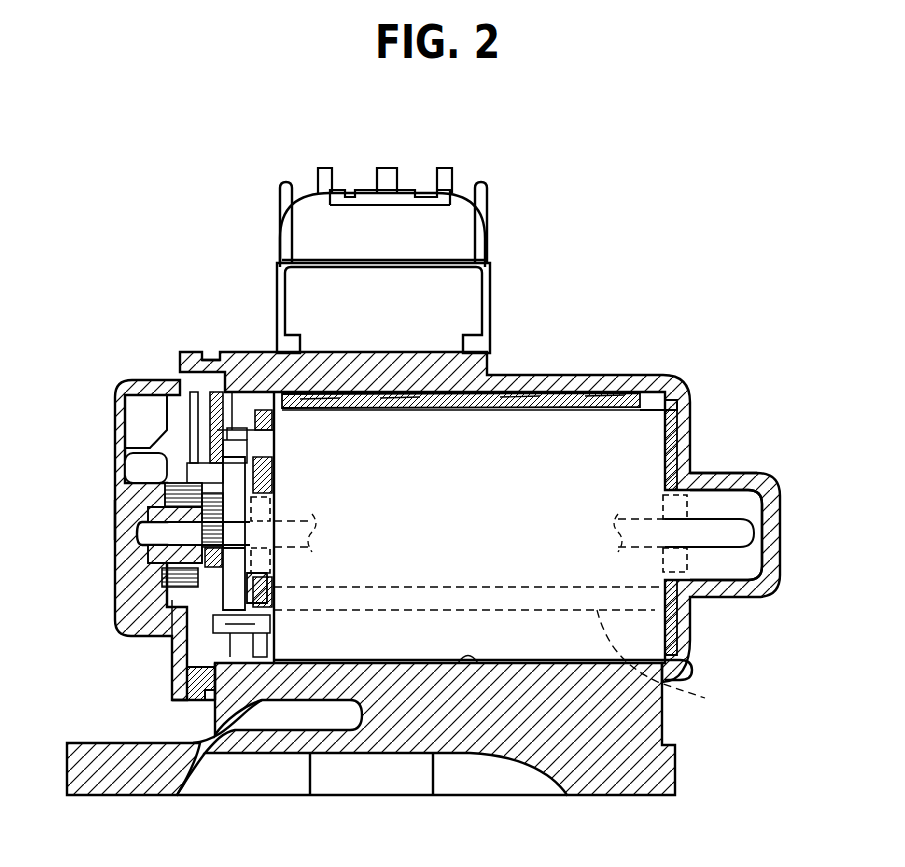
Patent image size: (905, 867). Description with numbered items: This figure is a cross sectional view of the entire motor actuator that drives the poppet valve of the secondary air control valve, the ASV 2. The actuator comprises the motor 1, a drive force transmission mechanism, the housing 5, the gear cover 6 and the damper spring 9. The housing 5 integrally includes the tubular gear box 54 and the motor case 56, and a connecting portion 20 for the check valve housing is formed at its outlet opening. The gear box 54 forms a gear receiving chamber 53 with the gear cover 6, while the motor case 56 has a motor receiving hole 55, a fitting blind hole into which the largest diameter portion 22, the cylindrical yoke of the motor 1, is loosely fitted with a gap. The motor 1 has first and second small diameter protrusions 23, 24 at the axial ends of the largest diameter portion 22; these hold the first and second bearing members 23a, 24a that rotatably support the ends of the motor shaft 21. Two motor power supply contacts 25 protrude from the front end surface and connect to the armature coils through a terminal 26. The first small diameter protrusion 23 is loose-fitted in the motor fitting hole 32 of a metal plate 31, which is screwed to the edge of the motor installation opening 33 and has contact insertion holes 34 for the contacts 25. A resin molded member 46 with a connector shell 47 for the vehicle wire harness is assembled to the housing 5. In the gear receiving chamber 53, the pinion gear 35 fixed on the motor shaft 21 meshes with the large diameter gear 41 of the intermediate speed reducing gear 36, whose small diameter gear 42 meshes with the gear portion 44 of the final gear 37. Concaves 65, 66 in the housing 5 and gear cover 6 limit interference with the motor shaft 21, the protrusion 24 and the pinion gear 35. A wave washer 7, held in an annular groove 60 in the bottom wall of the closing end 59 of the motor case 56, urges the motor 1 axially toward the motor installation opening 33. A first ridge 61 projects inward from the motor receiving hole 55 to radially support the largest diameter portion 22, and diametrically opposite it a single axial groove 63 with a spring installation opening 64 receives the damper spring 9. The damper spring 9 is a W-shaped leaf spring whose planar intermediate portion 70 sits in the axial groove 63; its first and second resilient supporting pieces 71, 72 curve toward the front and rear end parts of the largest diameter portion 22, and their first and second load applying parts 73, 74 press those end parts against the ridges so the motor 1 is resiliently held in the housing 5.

The motor 1 is at (473, 366).
The secondary air control valve (ASV) 2 is at (665, 345).
The housing 5 is at (688, 386).
The gear cover 6 is at (180, 362).
The wave washer 7 is at (677, 430).
The damper spring 9 is at (423, 341).
The connecting portion 20 is at (625, 795).
The motor shaft 21 is at (140, 535).
The cylindrical portion (largest diameter portion) 22 is at (543, 403).
The first small diameter protrusion 23 is at (245, 573).
The first bearing member 23a is at (274, 500).
The second small diameter protrusion 24 is at (697, 573).
The second bearing member 24a is at (660, 498).
The motor power supply contacts 25 is at (192, 673).
The terminal 26 is at (277, 595).
The metal plate 31 is at (180, 697).
The motor fitting hole 32 is at (185, 635).
The motor installation opening 33 is at (240, 432).
The contact insertion holes 34 is at (270, 610).
The pinion gear 35 is at (148, 560).
The intermediate speed reducing gear 36 is at (111, 494).
The final gear 37 is at (226, 311).
The large diameter gear 41 is at (150, 480).
The small diameter gear 42 is at (148, 462).
The gear portion 44 is at (218, 352).
The resin molded member 46 is at (413, 240).
The connector shell 47 is at (455, 213).
The gear receiving chamber 53 is at (150, 585).
The tubular gear box 54 is at (222, 695).
The motor receiving hole 55 is at (478, 663).
The motor case 56 is at (606, 380).
The closing end 59 is at (685, 455).
The annular groove 60 is at (690, 663).
The first ridge 61 is at (666, 663).
The axial groove 63 is at (680, 407).
The spring installation opening 64 is at (255, 392).
The concave (or convex) 65 is at (778, 522).
The concave (or convex) 66 is at (115, 517).
The intermediate portion 70 is at (485, 375).
The first resilient supporting piece 71 is at (400, 410).
The second resilient supporting piece 72 is at (520, 410).
The first load applying part 73 is at (320, 410).
The second load applying part 74 is at (603, 410).